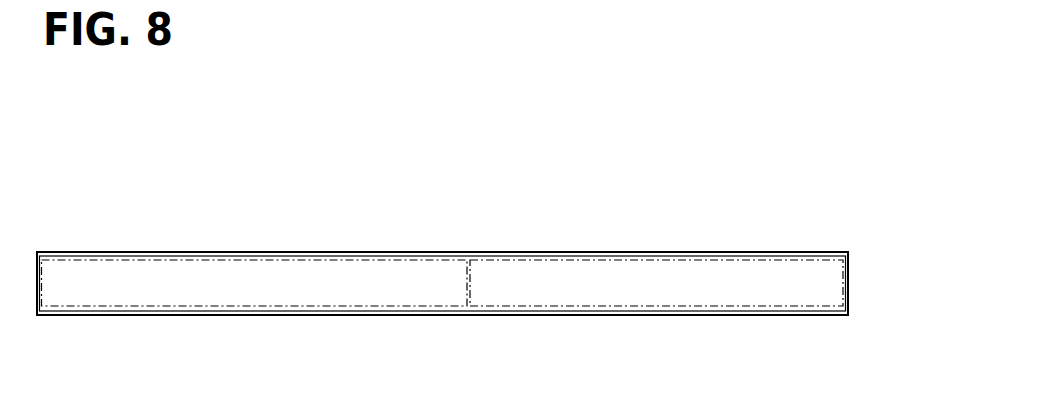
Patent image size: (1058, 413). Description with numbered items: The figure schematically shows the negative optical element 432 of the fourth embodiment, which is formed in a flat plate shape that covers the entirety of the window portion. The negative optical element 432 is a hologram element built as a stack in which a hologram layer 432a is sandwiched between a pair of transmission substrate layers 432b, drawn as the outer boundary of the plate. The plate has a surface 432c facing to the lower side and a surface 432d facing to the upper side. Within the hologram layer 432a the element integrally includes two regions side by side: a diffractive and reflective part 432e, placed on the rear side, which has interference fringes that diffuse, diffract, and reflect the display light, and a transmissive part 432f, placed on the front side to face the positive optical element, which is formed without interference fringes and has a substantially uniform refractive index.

The negative optical element 432 is at (471, 252).
The hologram layer 432a is at (848, 272).
The transmission substrate layers 432b is at (848, 257).
The surface facing to the lower side 432c is at (448, 314).
The surface facing to the upper side 432d is at (445, 253).
The diffractive and reflective part 432e is at (592, 305).
The transmissive part 432f is at (258, 305).